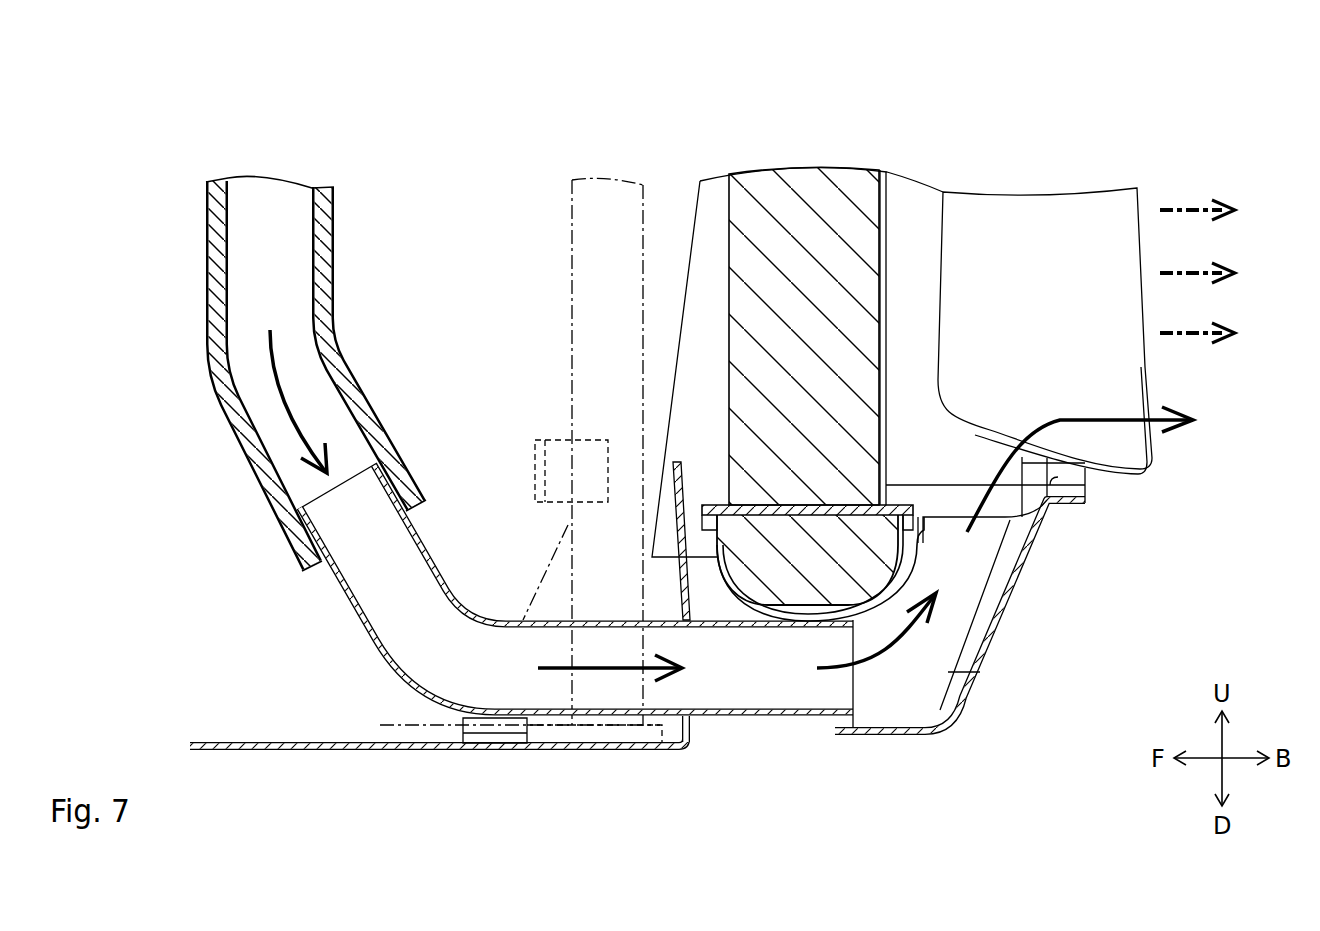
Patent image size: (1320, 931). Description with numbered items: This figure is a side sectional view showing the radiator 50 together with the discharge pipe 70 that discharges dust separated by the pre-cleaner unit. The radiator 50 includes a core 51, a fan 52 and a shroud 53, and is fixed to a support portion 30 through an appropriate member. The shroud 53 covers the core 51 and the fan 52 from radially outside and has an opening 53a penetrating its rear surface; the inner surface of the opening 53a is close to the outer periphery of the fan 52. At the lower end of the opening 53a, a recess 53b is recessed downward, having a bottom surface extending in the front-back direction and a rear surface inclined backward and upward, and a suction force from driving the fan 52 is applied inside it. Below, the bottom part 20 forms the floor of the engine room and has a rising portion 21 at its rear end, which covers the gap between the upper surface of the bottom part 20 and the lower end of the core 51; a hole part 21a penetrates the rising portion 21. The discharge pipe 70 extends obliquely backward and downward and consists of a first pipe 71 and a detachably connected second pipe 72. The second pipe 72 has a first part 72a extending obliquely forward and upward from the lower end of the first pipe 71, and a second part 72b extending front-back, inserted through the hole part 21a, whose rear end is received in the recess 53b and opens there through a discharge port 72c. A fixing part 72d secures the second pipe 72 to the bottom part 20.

The bottom part 20 is at (246, 745).
The rising portion 21 is at (673, 494).
The hole part 21a is at (687, 700).
The support portion 30 is at (572, 246).
The radiator 50 is at (1171, 100).
The core 51 is at (802, 223).
The fan 52 is at (1062, 237).
The shroud 53 is at (915, 237).
The opening 53a is at (1073, 483).
The recess 53b is at (958, 593).
The discharge pipe 70 is at (213, 116).
The first pipe 71 is at (248, 453).
The second pipe 72 is at (480, 497).
The first part 72a is at (357, 617).
The second part 72b is at (770, 719).
The discharge port 72c is at (865, 704).
The fixing part 72d is at (495, 728).